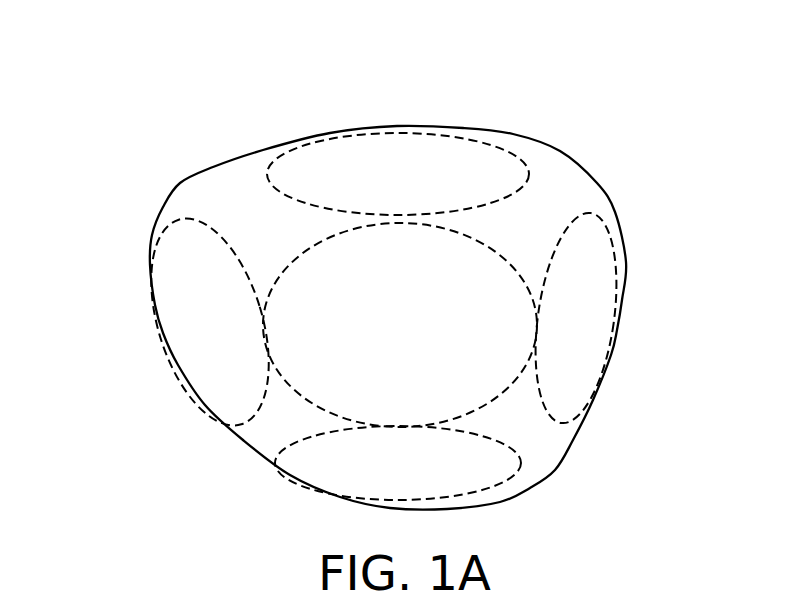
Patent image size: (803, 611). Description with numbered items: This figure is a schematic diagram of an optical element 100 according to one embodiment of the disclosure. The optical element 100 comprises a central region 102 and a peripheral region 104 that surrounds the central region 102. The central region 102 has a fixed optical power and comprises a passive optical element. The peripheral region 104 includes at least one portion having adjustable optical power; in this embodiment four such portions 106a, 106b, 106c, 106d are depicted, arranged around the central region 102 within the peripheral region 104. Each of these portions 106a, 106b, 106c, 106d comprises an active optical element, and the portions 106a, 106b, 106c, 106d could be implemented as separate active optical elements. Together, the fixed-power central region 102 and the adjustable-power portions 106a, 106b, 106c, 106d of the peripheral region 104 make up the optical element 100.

The optical element 100 is at (693, 89).
The central region 102 is at (420, 273).
The peripheral region 104 is at (228, 190).
The portion of the peripheral region 106a is at (208, 313).
The portion of the peripheral region 106b is at (413, 172).
The portion of the peripheral region 106c is at (585, 328).
The portion of the peripheral region 106d is at (480, 477).